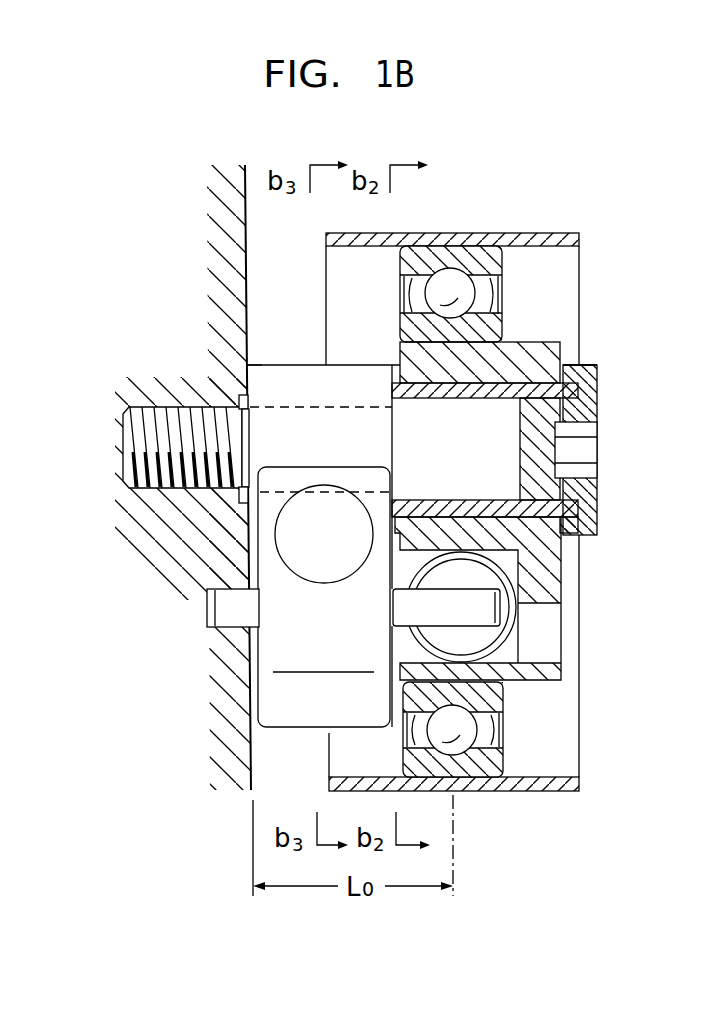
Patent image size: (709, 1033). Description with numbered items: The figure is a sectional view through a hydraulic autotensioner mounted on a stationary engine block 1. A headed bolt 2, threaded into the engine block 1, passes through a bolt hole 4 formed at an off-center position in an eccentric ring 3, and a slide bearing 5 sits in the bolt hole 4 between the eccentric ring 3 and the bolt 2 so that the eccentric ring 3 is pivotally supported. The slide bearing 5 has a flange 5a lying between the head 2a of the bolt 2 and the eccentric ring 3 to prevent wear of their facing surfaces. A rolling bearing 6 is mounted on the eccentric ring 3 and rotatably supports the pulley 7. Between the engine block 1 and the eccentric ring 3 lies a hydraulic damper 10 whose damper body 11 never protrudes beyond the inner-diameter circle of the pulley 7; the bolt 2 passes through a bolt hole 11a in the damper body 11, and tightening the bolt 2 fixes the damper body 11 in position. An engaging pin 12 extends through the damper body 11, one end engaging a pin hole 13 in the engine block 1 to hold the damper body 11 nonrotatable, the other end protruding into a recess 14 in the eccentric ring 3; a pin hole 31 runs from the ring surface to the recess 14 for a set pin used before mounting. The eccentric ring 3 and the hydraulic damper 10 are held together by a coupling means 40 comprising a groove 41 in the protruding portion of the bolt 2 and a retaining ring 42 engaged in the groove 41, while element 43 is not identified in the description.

The engine block 1 is at (240, 192).
The headed bolt 2 is at (498, 386).
The head of the bolt 2a is at (587, 520).
The eccentric ring 3 is at (548, 554).
The bolt hole 4 is at (503, 398).
The slide bearing 5 is at (555, 390).
The flange 5a is at (572, 368).
The rolling bearing 6 is at (492, 240).
The pulley 7 is at (472, 233).
The hydraulic damper 10 is at (300, 358).
The damper body 11 is at (270, 648).
The bolt hole 11a is at (233, 368).
The engaging pin 12 is at (490, 607).
The pin hole 13 is at (212, 606).
The recess 14 is at (517, 688).
The pin hole 31 is at (545, 657).
The coupling means 40 is at (236, 497).
The groove 41 is at (243, 436).
The retaining ring 42 is at (243, 396).
The washer 43 is at (243, 508).